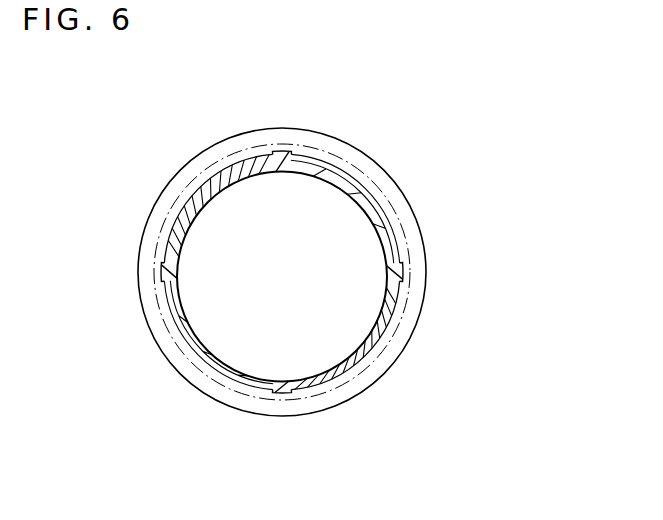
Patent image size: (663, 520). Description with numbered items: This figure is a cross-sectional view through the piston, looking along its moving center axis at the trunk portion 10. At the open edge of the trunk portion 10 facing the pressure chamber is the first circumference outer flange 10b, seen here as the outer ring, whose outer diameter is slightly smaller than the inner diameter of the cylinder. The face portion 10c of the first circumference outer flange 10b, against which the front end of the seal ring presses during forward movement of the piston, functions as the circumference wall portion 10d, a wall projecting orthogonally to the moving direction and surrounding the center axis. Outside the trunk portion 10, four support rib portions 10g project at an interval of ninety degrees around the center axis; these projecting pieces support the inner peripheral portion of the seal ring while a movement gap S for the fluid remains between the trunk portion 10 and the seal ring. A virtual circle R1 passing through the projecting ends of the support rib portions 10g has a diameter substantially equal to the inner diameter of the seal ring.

The trunk portion 10 is at (384, 334).
The first circumference outer flange 10b is at (318, 150).
The face portion 10c is at (418, 247).
The circumference wall portion 10d is at (441, 309).
The support rib portions 10g is at (283, 150).
The virtual circle R1 is at (400, 207).
The movement gap S is at (213, 180).